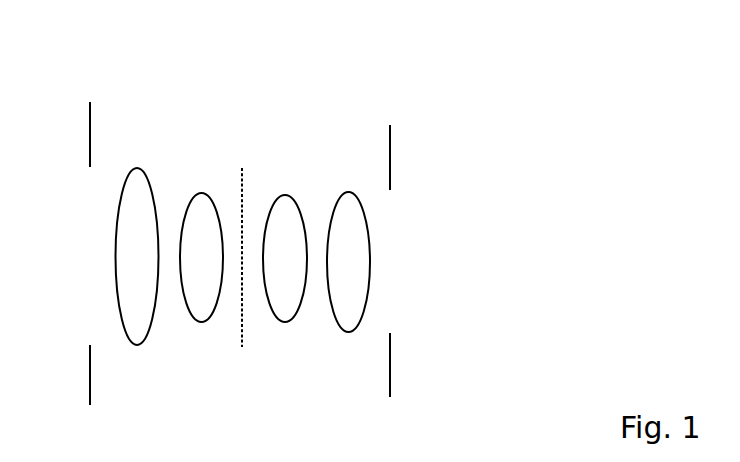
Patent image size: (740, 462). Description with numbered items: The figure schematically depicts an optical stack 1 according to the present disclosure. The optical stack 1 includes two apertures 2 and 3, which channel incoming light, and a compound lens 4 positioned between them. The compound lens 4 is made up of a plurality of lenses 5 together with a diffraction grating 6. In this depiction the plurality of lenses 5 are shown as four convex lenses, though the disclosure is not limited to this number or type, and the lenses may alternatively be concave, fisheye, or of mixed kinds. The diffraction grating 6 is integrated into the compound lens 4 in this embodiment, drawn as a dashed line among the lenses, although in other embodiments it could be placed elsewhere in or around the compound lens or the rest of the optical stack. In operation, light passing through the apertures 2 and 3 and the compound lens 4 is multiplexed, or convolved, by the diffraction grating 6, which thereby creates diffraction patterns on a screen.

The optical stack 1 is at (142, 48).
The aperture 2 is at (88, 121).
The aperture 3 is at (391, 142).
The compound lens 4 is at (225, 138).
The plurality of lenses 5 is at (140, 170).
The diffraction grating 6 is at (243, 177).